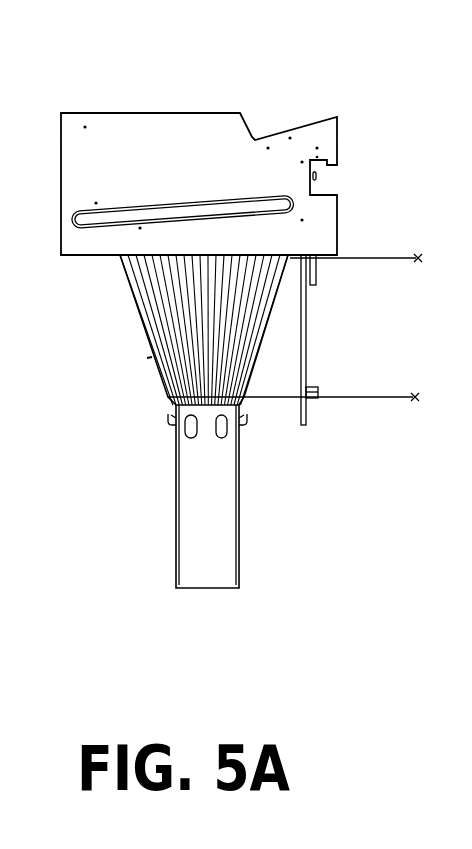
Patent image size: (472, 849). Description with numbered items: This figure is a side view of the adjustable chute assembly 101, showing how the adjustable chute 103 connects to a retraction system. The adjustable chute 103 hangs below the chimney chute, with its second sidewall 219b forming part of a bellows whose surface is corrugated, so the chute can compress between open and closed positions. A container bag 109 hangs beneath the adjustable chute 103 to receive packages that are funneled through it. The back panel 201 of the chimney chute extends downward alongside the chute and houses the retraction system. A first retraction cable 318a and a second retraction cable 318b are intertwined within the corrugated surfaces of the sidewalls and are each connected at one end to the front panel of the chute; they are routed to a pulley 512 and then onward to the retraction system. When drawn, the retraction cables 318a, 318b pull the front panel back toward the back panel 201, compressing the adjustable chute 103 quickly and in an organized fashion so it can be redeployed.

The adjustable chute assembly 101 is at (172, 72).
The adjustable chute 103 is at (84, 365).
The container bag 109 is at (178, 468).
The back panel 201 is at (303, 428).
The second sidewall 219b is at (135, 293).
The pulley 512 is at (312, 388).
The first retraction cable 318a is at (388, 262).
The second retraction cable 318b is at (376, 402).